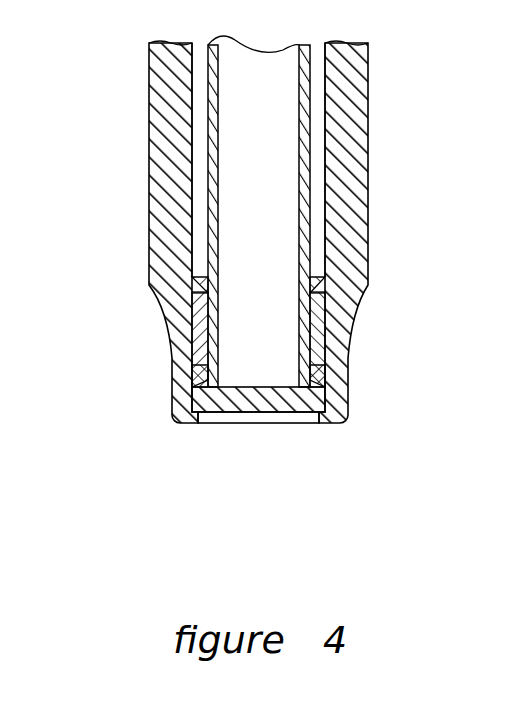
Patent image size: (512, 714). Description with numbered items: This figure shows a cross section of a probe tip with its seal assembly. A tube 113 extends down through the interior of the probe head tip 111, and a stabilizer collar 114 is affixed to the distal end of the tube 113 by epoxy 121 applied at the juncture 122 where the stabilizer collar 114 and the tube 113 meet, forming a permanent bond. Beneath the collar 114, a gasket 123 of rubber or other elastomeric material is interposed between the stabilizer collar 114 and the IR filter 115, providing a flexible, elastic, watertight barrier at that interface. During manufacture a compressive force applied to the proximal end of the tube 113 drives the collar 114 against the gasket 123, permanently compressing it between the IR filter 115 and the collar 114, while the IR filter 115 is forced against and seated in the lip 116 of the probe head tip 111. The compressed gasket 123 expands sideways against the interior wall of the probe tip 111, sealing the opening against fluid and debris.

The probe head tip 111 is at (376, 248).
The tube 113 is at (218, 222).
The stabilizer collar 114 is at (321, 316).
The IR filter 115 is at (303, 413).
The lip 116 is at (202, 425).
The epoxy 121 is at (337, 161).
The juncture 122 is at (206, 288).
The gasket 123 is at (178, 372).